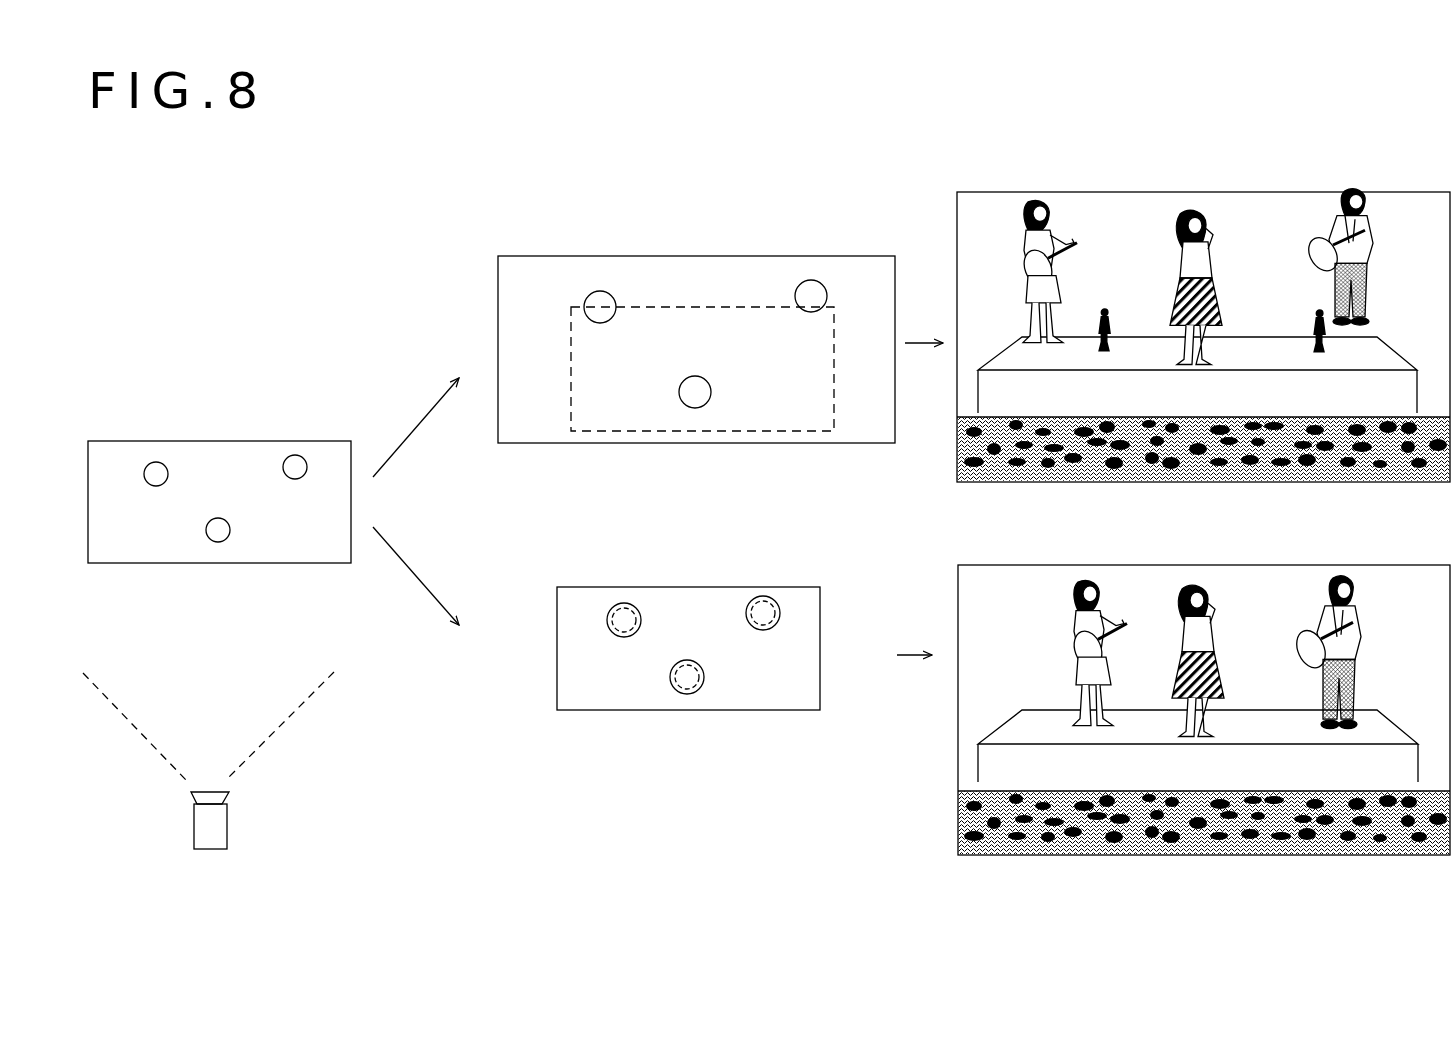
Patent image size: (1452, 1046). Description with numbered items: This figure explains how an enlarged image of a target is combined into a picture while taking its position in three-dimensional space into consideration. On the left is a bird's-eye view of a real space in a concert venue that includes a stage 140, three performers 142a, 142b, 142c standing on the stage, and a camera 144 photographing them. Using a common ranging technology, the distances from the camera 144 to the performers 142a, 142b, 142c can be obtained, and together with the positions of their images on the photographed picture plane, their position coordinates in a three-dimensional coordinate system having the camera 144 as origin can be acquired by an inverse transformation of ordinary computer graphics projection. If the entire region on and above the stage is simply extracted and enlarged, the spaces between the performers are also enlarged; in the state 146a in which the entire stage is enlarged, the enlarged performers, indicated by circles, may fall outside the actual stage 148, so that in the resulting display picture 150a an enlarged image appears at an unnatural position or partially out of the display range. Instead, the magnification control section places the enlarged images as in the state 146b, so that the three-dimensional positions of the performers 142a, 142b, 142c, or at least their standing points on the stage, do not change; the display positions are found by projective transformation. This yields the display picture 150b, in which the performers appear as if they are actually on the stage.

The stage 140 is at (201, 440).
The performer 142a is at (150, 486).
The performer 142b is at (214, 542).
The performer 142c is at (290, 479).
The camera 144 is at (228, 832).
The state in which the entire stage is enlarged 146a is at (700, 238).
The state 146b is at (686, 572).
The actual stage 148 is at (598, 433).
The display picture 150a is at (1228, 191).
The display picture 150b is at (1225, 565).